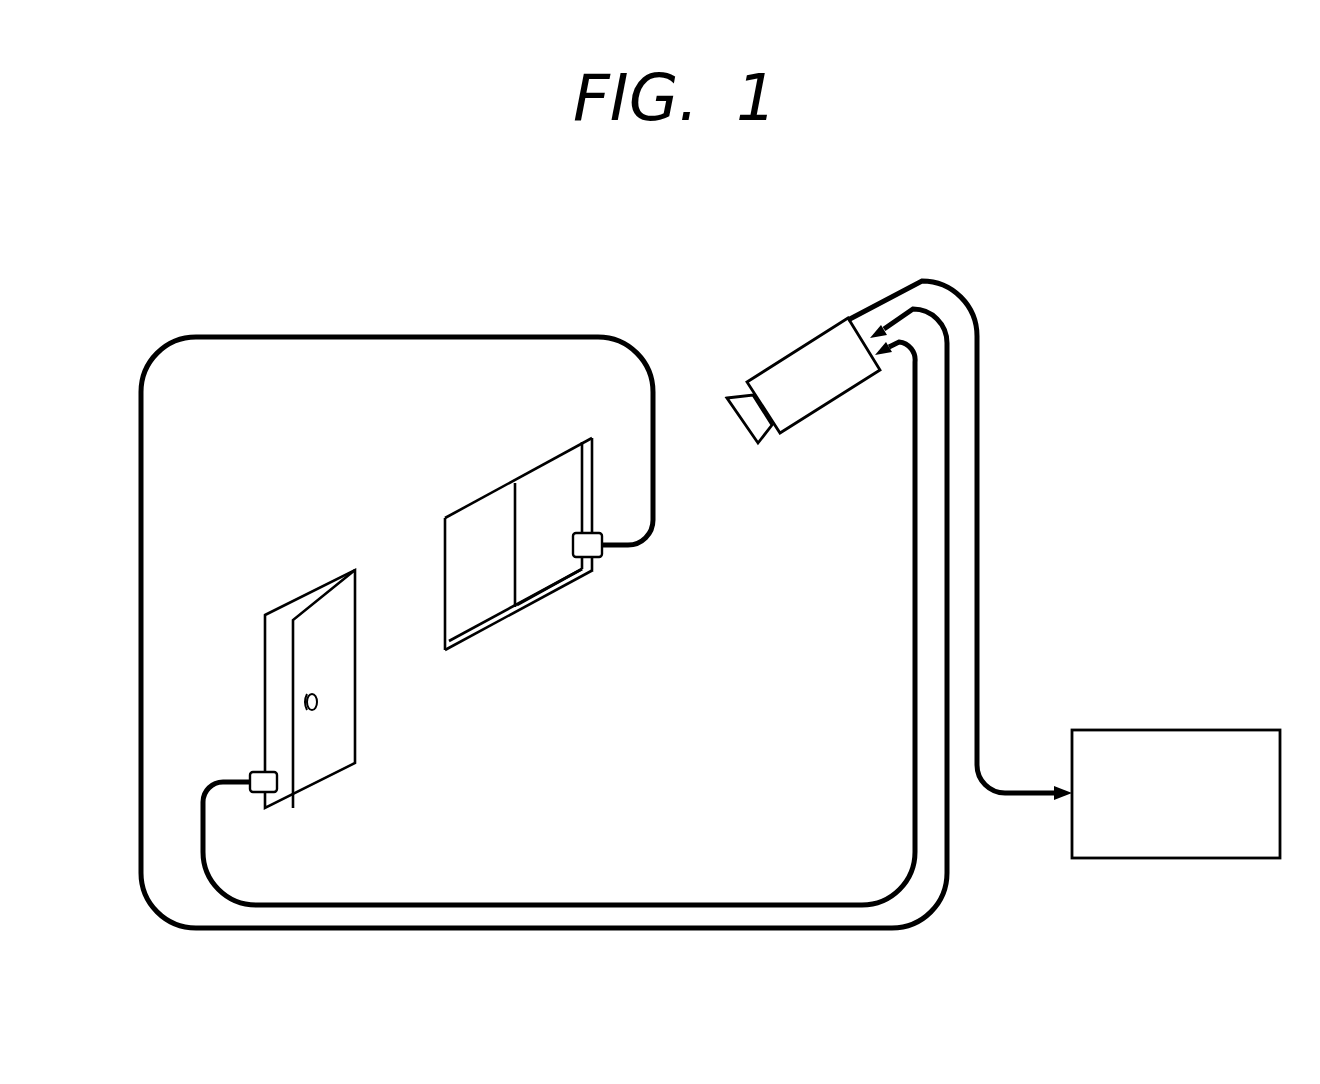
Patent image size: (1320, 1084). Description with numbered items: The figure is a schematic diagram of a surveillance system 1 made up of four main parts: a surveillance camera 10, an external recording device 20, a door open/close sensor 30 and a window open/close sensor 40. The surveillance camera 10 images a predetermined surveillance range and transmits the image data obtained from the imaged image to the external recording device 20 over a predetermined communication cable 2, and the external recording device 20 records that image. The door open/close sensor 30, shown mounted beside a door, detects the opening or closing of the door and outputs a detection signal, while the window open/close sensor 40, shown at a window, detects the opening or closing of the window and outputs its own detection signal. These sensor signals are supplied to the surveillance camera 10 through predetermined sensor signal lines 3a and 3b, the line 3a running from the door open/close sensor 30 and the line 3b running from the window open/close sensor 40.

The surveillance system 1 is at (642, 279).
The communication cable 2 is at (978, 523).
The sensor signal line 3a is at (558, 902).
The sensor signal line 3b is at (367, 332).
The surveillance camera 10 is at (783, 360).
The external recording device 20 is at (1207, 728).
The door open/close sensor 30 is at (262, 794).
The window open/close sensor 40 is at (592, 550).